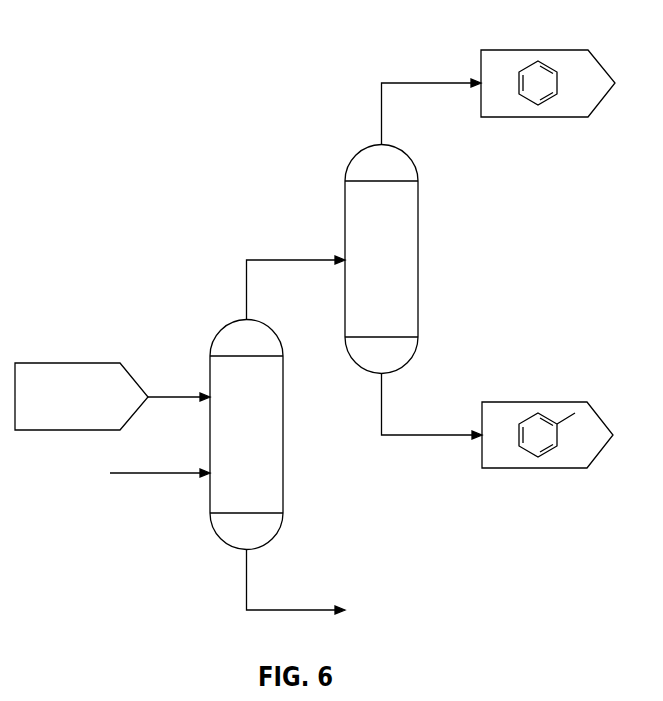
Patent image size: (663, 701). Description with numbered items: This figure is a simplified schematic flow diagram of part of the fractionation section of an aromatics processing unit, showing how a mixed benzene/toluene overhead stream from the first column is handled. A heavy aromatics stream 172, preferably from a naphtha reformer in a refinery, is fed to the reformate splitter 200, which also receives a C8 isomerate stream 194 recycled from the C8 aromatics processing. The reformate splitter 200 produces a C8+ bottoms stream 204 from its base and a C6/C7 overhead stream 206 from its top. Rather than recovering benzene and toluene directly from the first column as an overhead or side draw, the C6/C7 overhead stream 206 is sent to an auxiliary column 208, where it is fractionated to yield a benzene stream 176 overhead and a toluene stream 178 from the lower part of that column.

The heavy aromatics stream 172 is at (68, 363).
The C8 isomerate stream 194 is at (132, 475).
The reformate splitter 200 is at (285, 435).
The C8+ bottoms stream 204 is at (241, 573).
The C6/C7 overhead stream 206 is at (280, 258).
The auxiliary column 208 is at (420, 233).
The benzene stream 176 is at (533, 50).
The toluene stream 178 is at (533, 402).